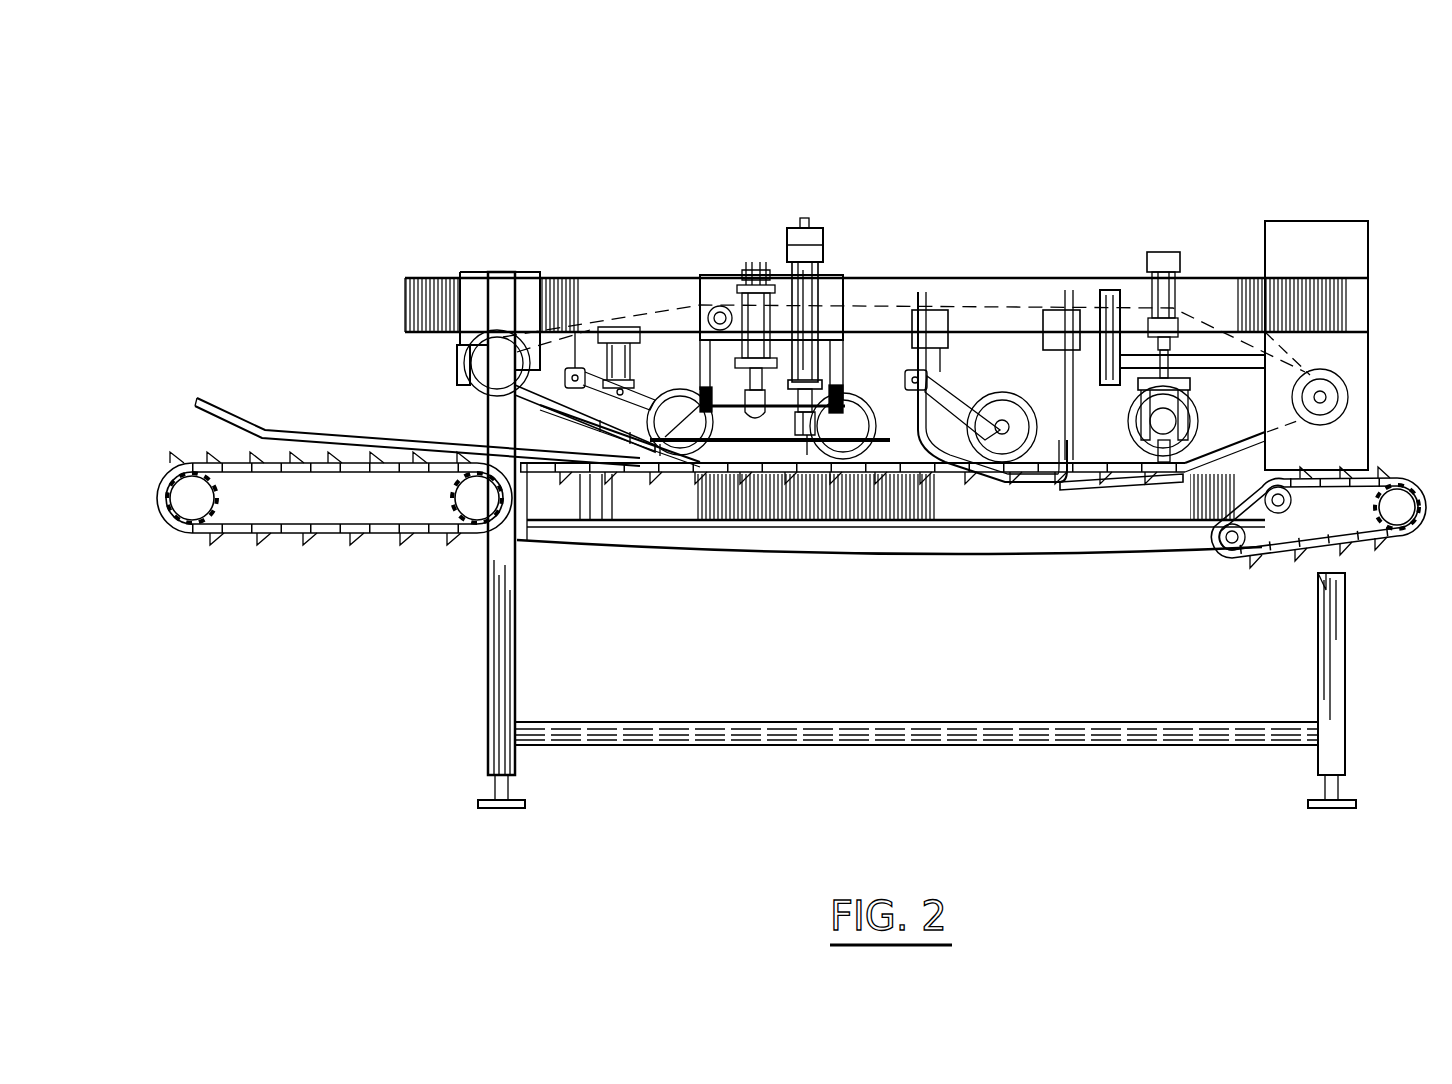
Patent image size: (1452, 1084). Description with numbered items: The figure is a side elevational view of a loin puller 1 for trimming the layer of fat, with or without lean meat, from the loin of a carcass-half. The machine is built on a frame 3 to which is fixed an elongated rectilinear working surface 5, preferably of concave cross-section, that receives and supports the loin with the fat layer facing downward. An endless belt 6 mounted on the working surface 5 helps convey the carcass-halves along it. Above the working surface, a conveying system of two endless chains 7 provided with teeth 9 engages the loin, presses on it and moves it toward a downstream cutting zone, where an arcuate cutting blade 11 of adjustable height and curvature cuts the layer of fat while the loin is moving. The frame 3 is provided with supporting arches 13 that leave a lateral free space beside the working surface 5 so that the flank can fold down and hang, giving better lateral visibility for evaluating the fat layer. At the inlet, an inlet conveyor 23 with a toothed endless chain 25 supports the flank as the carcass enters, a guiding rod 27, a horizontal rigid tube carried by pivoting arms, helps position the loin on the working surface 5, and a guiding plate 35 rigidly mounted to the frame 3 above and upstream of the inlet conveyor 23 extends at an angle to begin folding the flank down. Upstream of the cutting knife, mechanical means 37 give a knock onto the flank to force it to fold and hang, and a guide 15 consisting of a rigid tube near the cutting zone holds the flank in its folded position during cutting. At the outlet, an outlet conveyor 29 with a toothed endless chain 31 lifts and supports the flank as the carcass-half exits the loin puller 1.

The loin puller 1 is at (945, 162).
The frame 3 is at (1302, 222).
The working surface 5 is at (573, 443).
The endless belt 6 is at (627, 437).
The endless chains 7 is at (1080, 483).
The teeth 9 is at (788, 456).
The arcuate cutting blade 11 is at (1153, 458).
The supporting arches 13 is at (486, 288).
The guide 15 is at (1087, 452).
The inlet conveyor 23 is at (334, 527).
The endless chain 25 is at (205, 462).
The guiding rod 27 is at (243, 412).
The outlet conveyor 29 is at (1324, 522).
The endless chain 31 is at (1390, 483).
The guiding plate 35 is at (462, 367).
The mechanical means 37 is at (833, 274).